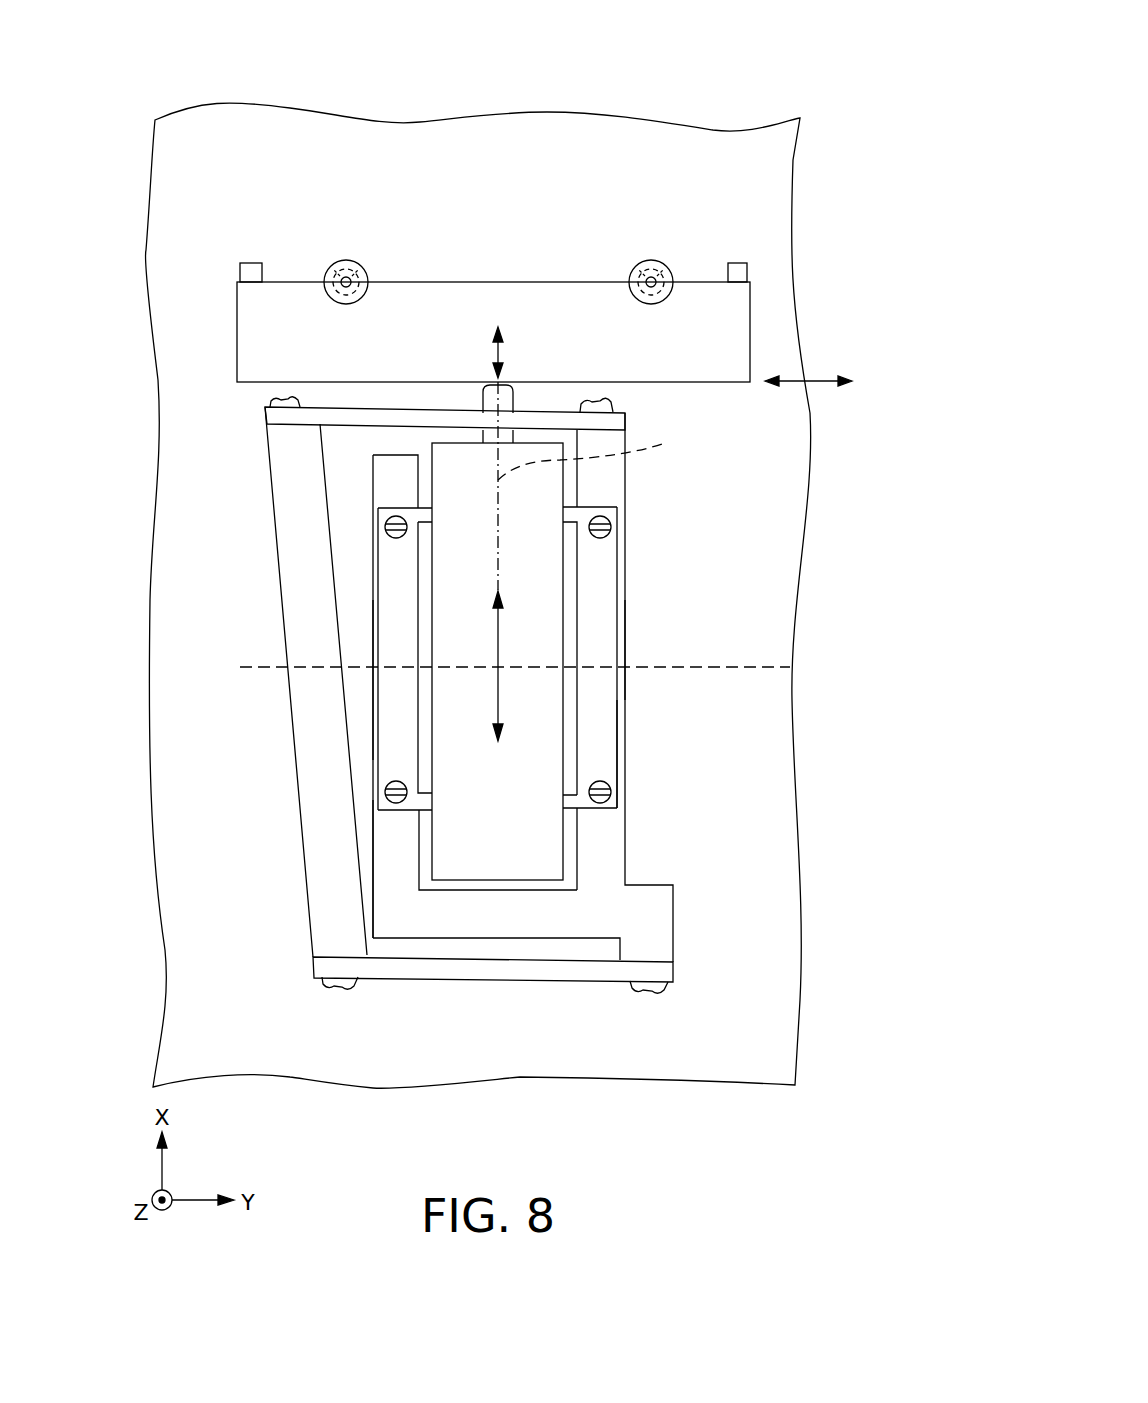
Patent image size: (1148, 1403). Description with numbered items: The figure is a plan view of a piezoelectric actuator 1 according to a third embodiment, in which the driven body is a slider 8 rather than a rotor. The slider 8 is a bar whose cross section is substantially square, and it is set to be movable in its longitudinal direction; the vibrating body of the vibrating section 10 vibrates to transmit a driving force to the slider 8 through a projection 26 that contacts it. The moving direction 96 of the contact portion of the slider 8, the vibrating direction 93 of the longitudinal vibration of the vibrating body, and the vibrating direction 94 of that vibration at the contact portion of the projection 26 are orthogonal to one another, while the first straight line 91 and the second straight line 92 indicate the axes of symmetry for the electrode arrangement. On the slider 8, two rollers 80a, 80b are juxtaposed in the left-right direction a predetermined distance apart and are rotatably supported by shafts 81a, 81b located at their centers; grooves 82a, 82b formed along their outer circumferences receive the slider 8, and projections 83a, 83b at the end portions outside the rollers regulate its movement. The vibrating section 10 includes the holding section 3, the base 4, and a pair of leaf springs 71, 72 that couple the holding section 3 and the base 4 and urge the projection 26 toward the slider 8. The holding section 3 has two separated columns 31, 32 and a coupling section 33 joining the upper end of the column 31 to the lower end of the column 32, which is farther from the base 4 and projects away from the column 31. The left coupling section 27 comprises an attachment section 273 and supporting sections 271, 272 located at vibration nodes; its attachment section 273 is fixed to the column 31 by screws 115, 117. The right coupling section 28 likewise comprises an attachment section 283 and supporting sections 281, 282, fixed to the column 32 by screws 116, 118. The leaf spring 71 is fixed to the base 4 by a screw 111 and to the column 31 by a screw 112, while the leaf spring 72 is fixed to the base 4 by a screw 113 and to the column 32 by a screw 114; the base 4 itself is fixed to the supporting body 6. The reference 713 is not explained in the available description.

The piezoelectric actuator 1 is at (692, 68).
The supporting body 6 is at (737, 145).
The slider 8 is at (707, 278).
The projection 83a is at (250, 262).
The projection 83b is at (745, 263).
The roller 80a is at (360, 262).
The roller 80b is at (652, 262).
The shaft 81a is at (333, 260).
The shaft 81b is at (645, 262).
The groove 82a is at (370, 267).
The groove 82b is at (662, 265).
The vibrating direction 94 is at (495, 355).
The contact portion 713 is at (502, 395).
The projection 26 is at (493, 402).
The moving direction 96 is at (808, 381).
The leaf spring 71 is at (368, 413).
The leaf spring 72 is at (527, 978).
The screw 111 is at (270, 405).
The screw 112 is at (620, 393).
The screw 113 is at (320, 988).
The screw 114 is at (633, 990).
The base 4 is at (295, 547).
The holding section 3 is at (625, 583).
The coupling section 27 is at (395, 653).
The coupling section 28 is at (600, 680).
The supporting section 271 is at (430, 513).
The supporting section 272 is at (427, 803).
The attachment section 273 is at (395, 712).
The supporting section 281 is at (572, 514).
The supporting section 282 is at (575, 808).
The attachment section 283 is at (600, 718).
The column 31 is at (392, 830).
The column 32 is at (622, 645).
The coupling section 33 is at (478, 912).
The screw 115 is at (390, 535).
The screw 116 is at (612, 525).
The screw 117 is at (388, 789).
The screw 118 is at (612, 786).
The vibrating direction 93 is at (500, 637).
The second straight line 92 is at (600, 453).
The first straight line 91 is at (745, 668).
The vibrating section 10 is at (266, 630).